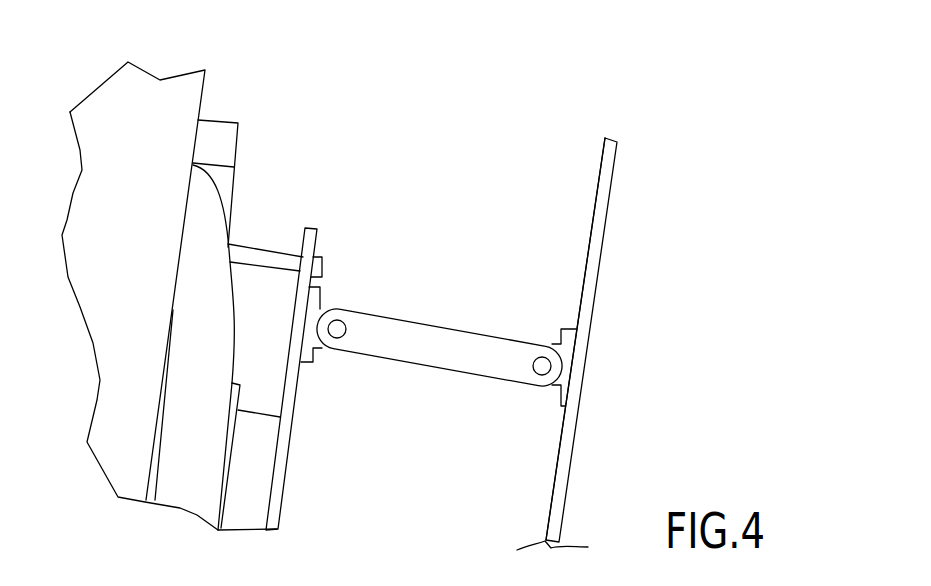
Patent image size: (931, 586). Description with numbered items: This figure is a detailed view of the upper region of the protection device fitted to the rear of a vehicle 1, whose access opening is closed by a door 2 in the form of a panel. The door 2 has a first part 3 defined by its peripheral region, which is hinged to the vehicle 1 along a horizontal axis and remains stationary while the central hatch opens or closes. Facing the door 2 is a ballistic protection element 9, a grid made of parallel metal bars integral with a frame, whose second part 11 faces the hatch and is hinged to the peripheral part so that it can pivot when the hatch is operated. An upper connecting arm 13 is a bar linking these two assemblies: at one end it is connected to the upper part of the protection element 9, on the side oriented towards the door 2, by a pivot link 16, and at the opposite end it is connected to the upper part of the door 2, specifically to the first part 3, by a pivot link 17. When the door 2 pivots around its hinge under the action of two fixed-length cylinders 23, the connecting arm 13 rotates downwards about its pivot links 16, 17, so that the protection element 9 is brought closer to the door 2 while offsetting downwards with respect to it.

The vehicle 1 is at (117, 108).
The door 2 is at (285, 484).
The first part 3 is at (287, 445).
The ballistic protection element 9 is at (609, 199).
The second part 11 is at (595, 258).
The upper connecting arm 13 is at (450, 347).
The pivot link 16 is at (545, 367).
The pivot link 17 is at (339, 328).
The cylinder 23 is at (205, 245).